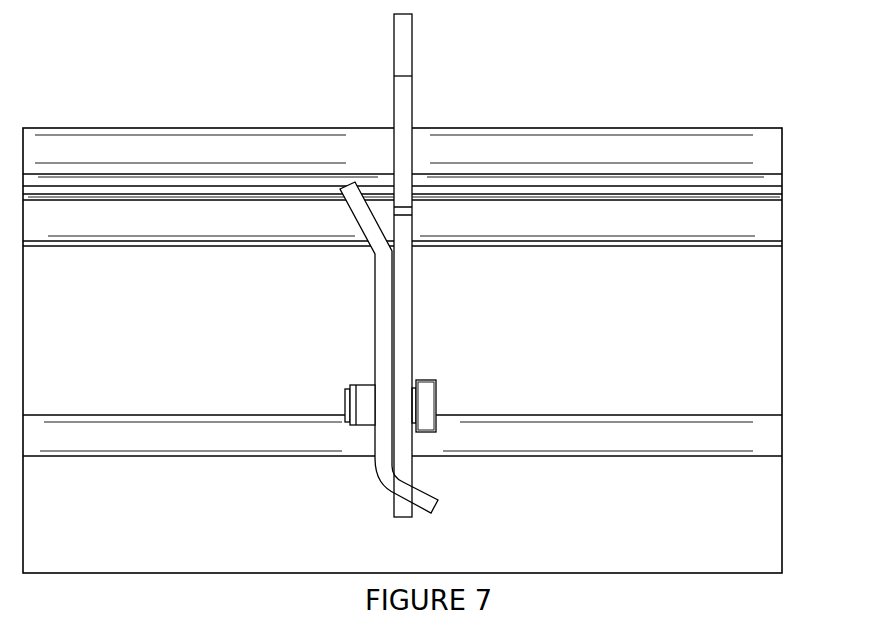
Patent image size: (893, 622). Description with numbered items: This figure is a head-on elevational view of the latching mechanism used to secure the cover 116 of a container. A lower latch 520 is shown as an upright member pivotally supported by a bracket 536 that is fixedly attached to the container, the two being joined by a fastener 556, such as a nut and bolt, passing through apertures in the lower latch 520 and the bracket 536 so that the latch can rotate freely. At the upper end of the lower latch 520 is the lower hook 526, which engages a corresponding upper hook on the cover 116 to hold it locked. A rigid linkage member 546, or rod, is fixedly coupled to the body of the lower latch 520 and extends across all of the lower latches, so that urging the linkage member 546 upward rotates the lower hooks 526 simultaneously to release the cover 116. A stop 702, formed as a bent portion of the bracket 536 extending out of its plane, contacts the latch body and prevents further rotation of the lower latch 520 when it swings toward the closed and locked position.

The cover 116 is at (690, 152).
The lower latch 520 is at (408, 270).
The lower hook 526 is at (407, 229).
The bracket 536 is at (392, 377).
The linkage member 546 is at (664, 439).
The fastener 556 is at (363, 389).
The stop 702 is at (425, 503).